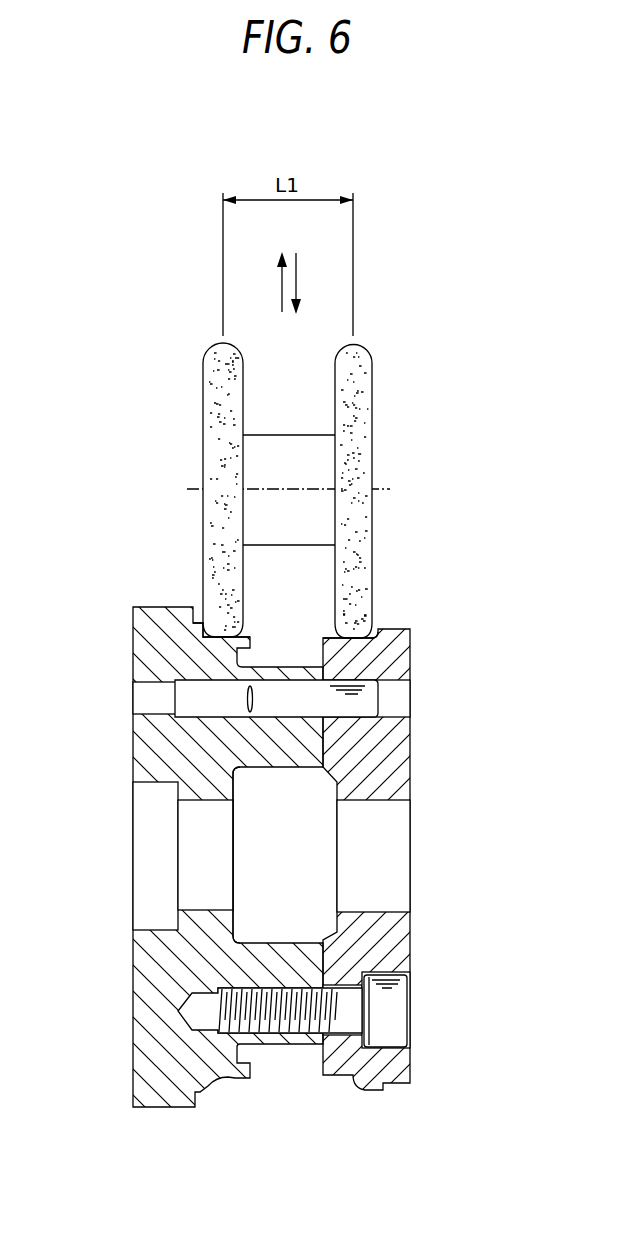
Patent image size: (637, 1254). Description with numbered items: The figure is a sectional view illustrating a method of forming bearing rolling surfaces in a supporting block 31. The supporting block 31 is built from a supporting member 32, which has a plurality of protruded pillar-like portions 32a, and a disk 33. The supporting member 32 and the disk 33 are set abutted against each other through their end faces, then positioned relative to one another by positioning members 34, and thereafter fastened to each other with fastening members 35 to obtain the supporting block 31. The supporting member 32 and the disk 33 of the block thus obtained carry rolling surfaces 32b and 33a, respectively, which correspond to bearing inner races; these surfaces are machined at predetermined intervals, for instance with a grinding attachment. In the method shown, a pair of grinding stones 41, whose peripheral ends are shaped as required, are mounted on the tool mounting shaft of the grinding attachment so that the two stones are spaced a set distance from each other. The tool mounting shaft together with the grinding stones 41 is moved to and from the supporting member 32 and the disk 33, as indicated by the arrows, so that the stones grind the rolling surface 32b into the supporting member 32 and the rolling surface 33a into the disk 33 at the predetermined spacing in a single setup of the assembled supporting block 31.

The supporting block 31 is at (126, 672).
The supporting member 32 is at (148, 755).
The protruded pillar-like portion 32a is at (257, 758).
The rolling surface 32b is at (217, 633).
The disk 33 is at (400, 758).
The rolling surface 33a is at (357, 634).
The positioning member 34 is at (368, 693).
The fastening member 35 is at (392, 1013).
The grinding stone 41 is at (202, 433).